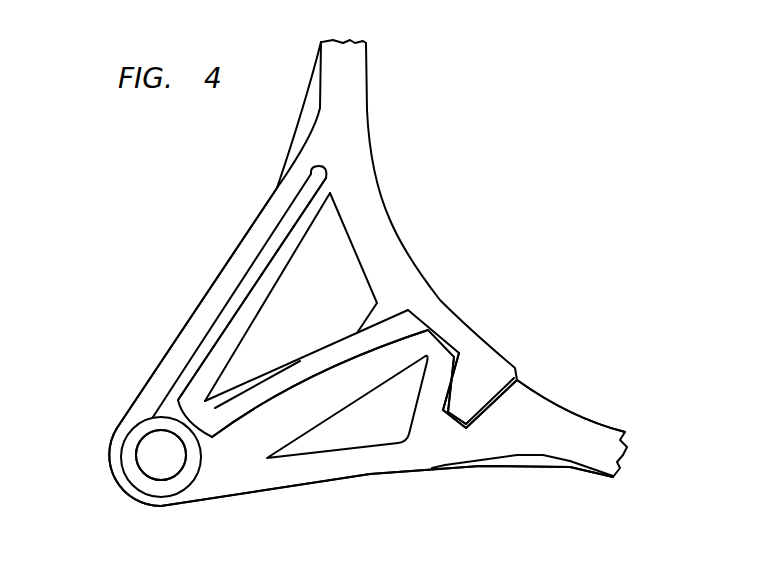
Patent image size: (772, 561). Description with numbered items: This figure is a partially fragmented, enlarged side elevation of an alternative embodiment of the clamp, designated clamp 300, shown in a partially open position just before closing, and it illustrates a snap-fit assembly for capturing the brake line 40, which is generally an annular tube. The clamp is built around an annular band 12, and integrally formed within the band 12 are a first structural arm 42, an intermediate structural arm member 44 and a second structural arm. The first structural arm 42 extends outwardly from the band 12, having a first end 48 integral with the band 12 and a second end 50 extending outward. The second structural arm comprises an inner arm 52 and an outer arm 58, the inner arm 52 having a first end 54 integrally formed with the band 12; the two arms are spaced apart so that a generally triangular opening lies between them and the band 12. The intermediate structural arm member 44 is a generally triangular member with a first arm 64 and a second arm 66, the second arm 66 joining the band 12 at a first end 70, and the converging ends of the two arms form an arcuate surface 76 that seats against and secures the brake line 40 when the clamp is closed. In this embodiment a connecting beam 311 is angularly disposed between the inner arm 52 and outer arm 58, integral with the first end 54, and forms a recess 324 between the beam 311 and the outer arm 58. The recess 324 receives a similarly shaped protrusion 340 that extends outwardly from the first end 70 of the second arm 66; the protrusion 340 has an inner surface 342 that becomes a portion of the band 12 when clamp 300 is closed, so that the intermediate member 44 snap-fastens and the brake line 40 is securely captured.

The annular band 12 is at (350, 84).
The clamp 300 is at (528, 230).
The first structural arm 42 is at (233, 265).
The first end 48 is at (307, 210).
The first arm 64 is at (252, 312).
The intermediate structural arm member 44 is at (205, 347).
The second end 50 is at (131, 423).
The brake line 40 is at (168, 483).
The arcuate surface 76 is at (193, 421).
The second arm 66 is at (357, 330).
The first end 70 is at (380, 317).
The inner arm 52 is at (347, 393).
The outer arm 58 is at (322, 480).
The first end 54 is at (429, 335).
The inner surface 342 is at (438, 383).
The connecting beam 311 is at (488, 376).
The protrusion 340 is at (488, 378).
The recess 324 is at (458, 424).